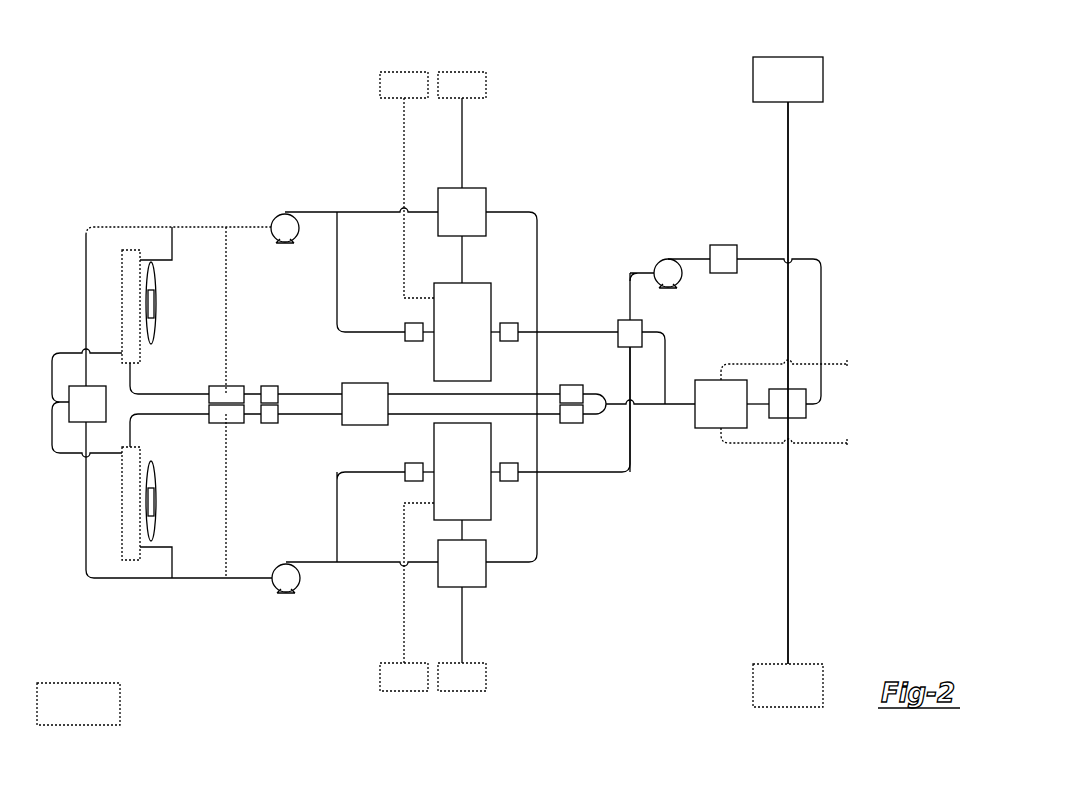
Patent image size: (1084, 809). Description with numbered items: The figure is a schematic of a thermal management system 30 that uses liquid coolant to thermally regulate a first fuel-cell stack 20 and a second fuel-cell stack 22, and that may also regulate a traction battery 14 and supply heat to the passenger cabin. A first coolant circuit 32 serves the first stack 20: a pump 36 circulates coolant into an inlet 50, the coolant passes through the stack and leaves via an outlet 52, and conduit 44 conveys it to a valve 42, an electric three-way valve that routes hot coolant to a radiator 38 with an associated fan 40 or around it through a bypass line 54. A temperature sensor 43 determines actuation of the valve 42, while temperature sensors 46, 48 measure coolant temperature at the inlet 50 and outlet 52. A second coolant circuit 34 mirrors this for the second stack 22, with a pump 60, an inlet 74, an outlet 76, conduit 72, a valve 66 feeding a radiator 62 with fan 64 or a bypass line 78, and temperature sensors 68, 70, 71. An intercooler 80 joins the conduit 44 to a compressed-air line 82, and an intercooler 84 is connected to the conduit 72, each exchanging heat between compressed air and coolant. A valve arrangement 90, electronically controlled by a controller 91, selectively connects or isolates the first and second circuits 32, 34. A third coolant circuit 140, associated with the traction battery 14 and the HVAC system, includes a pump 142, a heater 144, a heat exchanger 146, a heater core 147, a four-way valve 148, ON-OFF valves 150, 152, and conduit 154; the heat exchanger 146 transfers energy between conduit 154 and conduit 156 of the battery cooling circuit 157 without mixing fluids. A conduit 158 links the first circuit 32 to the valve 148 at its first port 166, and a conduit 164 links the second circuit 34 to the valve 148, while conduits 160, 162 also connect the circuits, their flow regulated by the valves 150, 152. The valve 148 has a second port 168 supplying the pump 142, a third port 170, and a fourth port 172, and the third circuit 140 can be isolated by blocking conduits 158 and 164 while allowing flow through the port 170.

The traction battery 14 is at (788, 382).
The first fuel-cell stack 20 is at (462, 332).
The second fuel-cell stack 22 is at (462, 471).
The thermal management system 30 is at (638, 119).
The first coolant circuit 32 is at (179, 169).
The second coolant circuit 34 is at (516, 645).
The pump 36 is at (272, 226).
The radiator 38 is at (122, 279).
The fan 40 is at (158, 333).
The valve 42 is at (226, 394).
The temperature sensor 43 is at (270, 386).
The conduit 44 is at (336, 333).
The temperature sensor 46 is at (414, 342).
The temperature sensor 48 is at (510, 323).
The inlet 50 is at (432, 328).
The outlet 52 is at (493, 336).
The bypass line 54 is at (228, 303).
The pump 60 is at (299, 583).
The radiator 62 is at (141, 449).
The fan 64 is at (158, 478).
The valve 66 is at (226, 414).
The temperature sensor 68 is at (414, 463).
The temperature sensor 70 is at (511, 482).
The temperature sensor 71 is at (269, 424).
The conduit 72 is at (538, 512).
The inlet 74 is at (420, 482).
The outlet 76 is at (501, 465).
The bypass line 78 is at (228, 515).
The intercooler 80 is at (462, 235).
The compressed-air line 82 is at (464, 146).
The intercooler 84 is at (462, 553).
The valve arrangement 90 is at (365, 404).
The controller 91 is at (122, 706).
The third coolant circuit 140 is at (670, 236).
The pump 142 is at (660, 264).
The heater 144 is at (702, 259).
The heat exchanger 146 is at (787, 403).
The heater core 147 is at (732, 404).
The valve 148 is at (630, 333).
The ON-OFF valve 150 is at (571, 394).
The ON-OFF valve 152 is at (571, 414).
The conduit 154 is at (822, 313).
The conduit 156 is at (789, 194).
The battery cooling circuit 157 is at (796, 154).
The conduit 158 is at (567, 332).
The conduit 160 is at (627, 398).
The conduit 162 is at (604, 416).
The conduit 164 is at (634, 476).
The first port 166 is at (617, 326).
The second port 168 is at (630, 320).
The third port 170 is at (650, 333).
The fourth port 172 is at (622, 347).